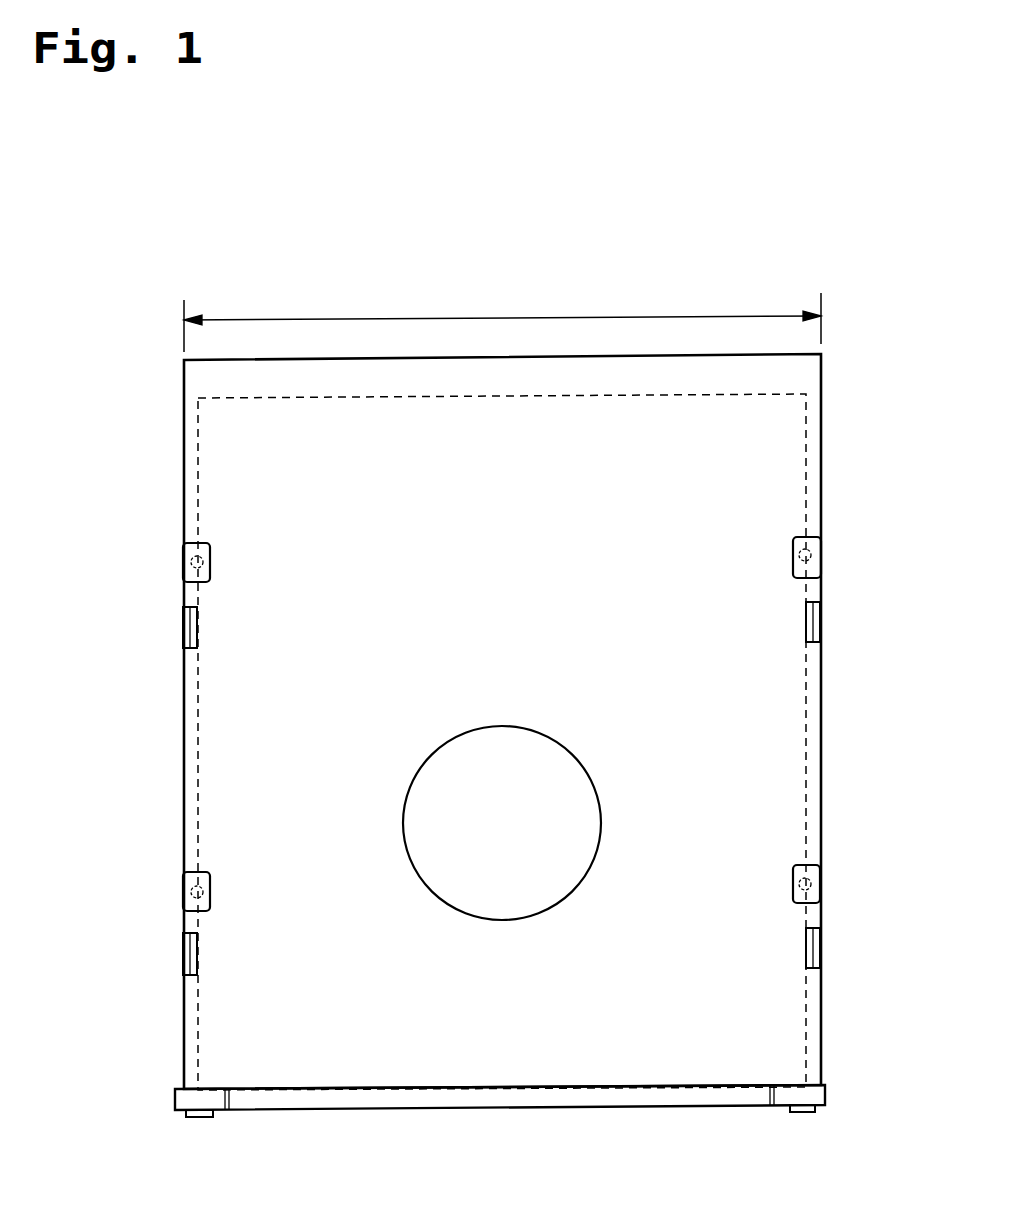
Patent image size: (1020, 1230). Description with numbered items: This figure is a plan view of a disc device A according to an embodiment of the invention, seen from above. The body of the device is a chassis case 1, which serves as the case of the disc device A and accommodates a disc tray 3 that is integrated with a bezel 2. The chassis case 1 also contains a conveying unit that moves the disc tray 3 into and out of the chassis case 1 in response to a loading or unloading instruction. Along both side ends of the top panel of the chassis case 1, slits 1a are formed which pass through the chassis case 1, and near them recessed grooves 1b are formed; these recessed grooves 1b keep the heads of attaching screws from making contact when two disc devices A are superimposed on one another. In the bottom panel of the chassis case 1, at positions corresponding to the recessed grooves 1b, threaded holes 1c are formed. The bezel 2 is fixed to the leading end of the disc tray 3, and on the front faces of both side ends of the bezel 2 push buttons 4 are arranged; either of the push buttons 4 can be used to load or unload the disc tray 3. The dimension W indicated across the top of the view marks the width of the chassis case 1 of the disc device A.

The chassis case 1 is at (768, 786).
The slits 1a is at (185, 625).
The recessed grooves 1b is at (187, 553).
The threaded holes 1c is at (185, 568).
The bezel 2 is at (550, 1108).
The disc tray 3 is at (782, 392).
The push buttons 4 is at (205, 1117).
The width W is at (502, 318).
The disc device A is at (824, 446).